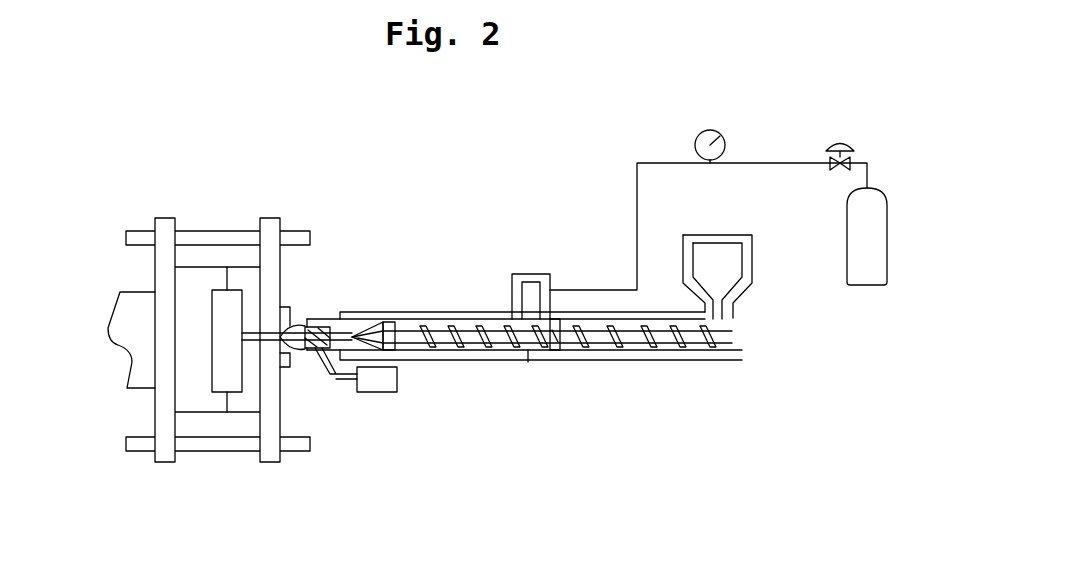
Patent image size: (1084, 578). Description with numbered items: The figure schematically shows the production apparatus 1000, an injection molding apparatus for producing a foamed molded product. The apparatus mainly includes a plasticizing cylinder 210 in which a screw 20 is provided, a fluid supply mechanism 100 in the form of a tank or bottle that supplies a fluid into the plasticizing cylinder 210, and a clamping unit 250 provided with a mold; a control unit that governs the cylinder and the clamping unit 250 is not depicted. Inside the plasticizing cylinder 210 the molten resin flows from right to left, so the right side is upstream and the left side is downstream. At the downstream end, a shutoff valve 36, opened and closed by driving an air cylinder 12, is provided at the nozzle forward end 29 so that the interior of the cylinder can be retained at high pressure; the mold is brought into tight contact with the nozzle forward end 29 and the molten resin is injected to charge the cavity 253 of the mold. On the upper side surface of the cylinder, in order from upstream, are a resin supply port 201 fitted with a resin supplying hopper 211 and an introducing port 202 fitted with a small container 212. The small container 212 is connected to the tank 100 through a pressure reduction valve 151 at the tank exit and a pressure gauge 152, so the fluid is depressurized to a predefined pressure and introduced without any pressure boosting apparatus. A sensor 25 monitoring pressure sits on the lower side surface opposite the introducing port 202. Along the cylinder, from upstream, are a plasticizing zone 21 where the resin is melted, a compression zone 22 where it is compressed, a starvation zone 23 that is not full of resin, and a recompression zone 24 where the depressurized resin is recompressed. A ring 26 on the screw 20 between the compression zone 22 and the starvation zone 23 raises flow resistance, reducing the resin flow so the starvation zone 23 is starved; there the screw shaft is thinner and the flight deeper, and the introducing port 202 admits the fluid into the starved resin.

The production apparatus 1000 is at (314, 211).
The clamping unit 250 is at (176, 365).
The cavity 253 is at (227, 382).
The nozzle forward end 29 is at (283, 347).
The shutoff valve 36 is at (306, 326).
The plasticizing cylinder 210 is at (343, 319).
The screw 20 is at (384, 326).
The air cylinder 12 is at (378, 380).
The small container 212 is at (530, 274).
The introducing port 202 is at (528, 318).
The ring 26 is at (559, 347).
The sensor 25 is at (530, 364).
The resin supplying hopper 211 is at (743, 257).
The resin supply port 201 is at (723, 320).
The pressure gauge 152 is at (693, 148).
The pressure reduction valve 151 is at (832, 161).
The fluid supply mechanism 100 is at (867, 230).
The recompression zone 24 is at (413, 366).
The starvation zone 23 is at (482, 366).
The compression zone 22 is at (568, 366).
The plasticizing zone 21 is at (645, 366).